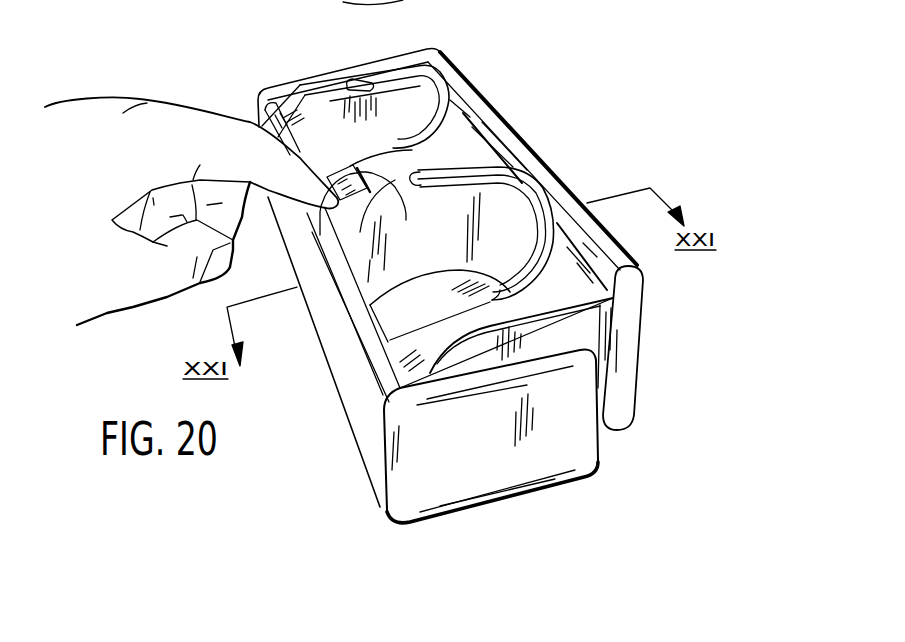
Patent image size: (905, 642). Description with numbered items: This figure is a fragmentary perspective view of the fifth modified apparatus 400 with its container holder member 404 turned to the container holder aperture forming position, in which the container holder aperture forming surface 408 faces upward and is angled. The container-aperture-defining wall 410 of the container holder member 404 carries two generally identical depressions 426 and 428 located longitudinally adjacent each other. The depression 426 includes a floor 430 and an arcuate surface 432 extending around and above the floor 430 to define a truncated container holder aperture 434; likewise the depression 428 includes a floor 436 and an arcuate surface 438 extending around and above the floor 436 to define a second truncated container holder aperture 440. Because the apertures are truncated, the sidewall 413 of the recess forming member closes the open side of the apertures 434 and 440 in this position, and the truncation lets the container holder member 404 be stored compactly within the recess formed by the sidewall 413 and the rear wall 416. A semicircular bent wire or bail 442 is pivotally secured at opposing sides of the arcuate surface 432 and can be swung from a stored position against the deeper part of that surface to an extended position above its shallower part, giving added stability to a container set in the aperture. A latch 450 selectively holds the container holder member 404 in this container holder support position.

The fifth modified apparatus 400 is at (487, 21).
The container holder member 404 is at (455, 62).
The container holder aperture forming surface 408 is at (473, 157).
The container-aperture-defining wall 410 is at (463, 217).
The sidewall 413 is at (264, 0).
The rear wall 416 is at (508, 450).
The depression 426 is at (397, 312).
The depression 428 is at (340, 118).
The floor 430 is at (450, 310).
The arcuate surface 432 is at (450, 253).
The truncated container holder aperture 434 is at (517, 253).
The floor 436 is at (346, 178).
The arcuate surface 438 is at (433, 127).
The second truncated container holder aperture 440 is at (368, 100).
The bail 442 is at (540, 273).
The latch 450 is at (476, 212).